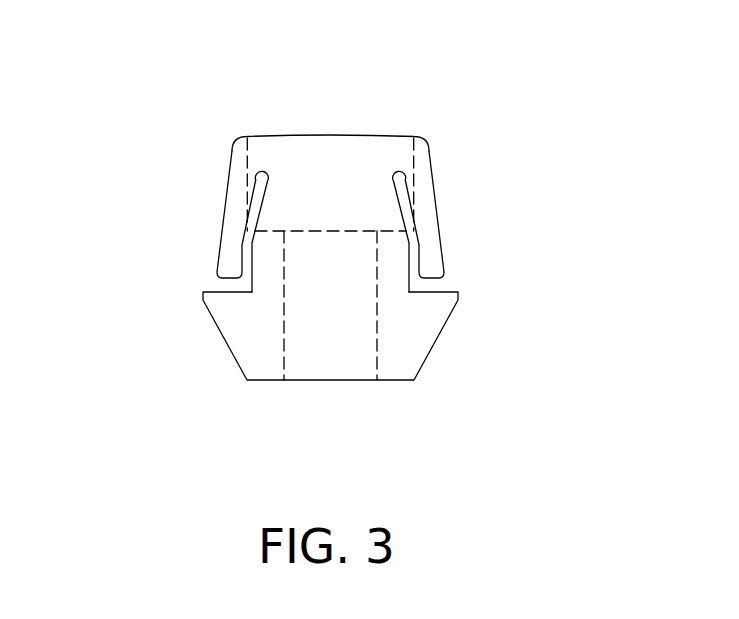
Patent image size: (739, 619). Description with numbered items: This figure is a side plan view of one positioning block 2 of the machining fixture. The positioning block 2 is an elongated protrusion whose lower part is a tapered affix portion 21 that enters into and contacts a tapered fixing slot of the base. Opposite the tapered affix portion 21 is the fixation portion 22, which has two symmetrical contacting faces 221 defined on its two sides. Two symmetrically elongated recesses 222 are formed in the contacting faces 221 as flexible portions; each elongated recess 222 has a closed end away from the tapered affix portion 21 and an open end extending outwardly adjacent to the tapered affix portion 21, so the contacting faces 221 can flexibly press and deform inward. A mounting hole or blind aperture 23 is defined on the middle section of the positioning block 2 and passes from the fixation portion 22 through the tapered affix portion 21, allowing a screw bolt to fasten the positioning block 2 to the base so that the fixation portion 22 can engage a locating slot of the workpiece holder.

The positioning block 2 is at (321, 242).
The tapered affix portion 21 is at (332, 350).
The fixation portion 22 is at (333, 195).
The mounting hole or blind aperture 23 is at (318, 250).
The symmetrical contacting faces 221 is at (223, 207).
The symmetrically elongated recesses 222 is at (253, 218).